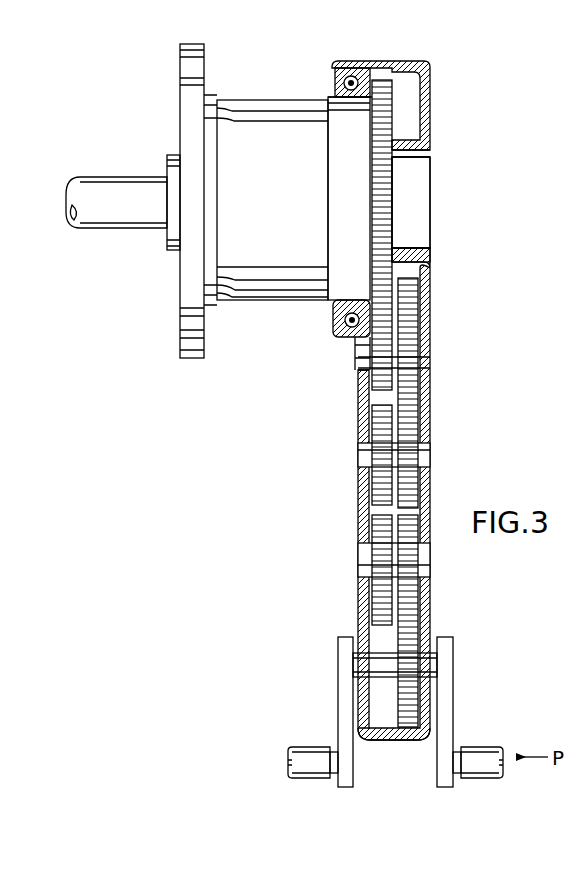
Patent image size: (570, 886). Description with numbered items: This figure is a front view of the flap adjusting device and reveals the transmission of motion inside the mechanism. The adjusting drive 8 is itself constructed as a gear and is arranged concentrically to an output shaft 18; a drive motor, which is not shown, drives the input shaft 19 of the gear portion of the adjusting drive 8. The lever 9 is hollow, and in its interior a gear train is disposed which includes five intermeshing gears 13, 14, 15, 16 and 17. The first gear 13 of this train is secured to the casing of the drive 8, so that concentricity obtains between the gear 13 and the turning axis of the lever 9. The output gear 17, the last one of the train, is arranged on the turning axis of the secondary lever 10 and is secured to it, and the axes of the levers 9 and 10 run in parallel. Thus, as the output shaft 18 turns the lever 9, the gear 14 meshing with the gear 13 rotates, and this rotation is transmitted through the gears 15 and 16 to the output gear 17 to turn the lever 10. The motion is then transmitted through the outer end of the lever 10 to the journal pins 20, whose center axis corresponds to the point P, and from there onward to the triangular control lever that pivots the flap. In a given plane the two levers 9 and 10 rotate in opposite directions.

The adjusting drive 8 is at (255, 128).
The lever 9 is at (457, 427).
The secondary lever 10 is at (448, 700).
The first gear 13 is at (380, 221).
The gear 14 is at (405, 376).
The gear 15 is at (383, 488).
The gear 16 is at (383, 552).
The output gear 17 is at (415, 640).
The output shaft 18 is at (425, 180).
The input shaft 19 is at (117, 195).
The journal pins 20 is at (311, 756).